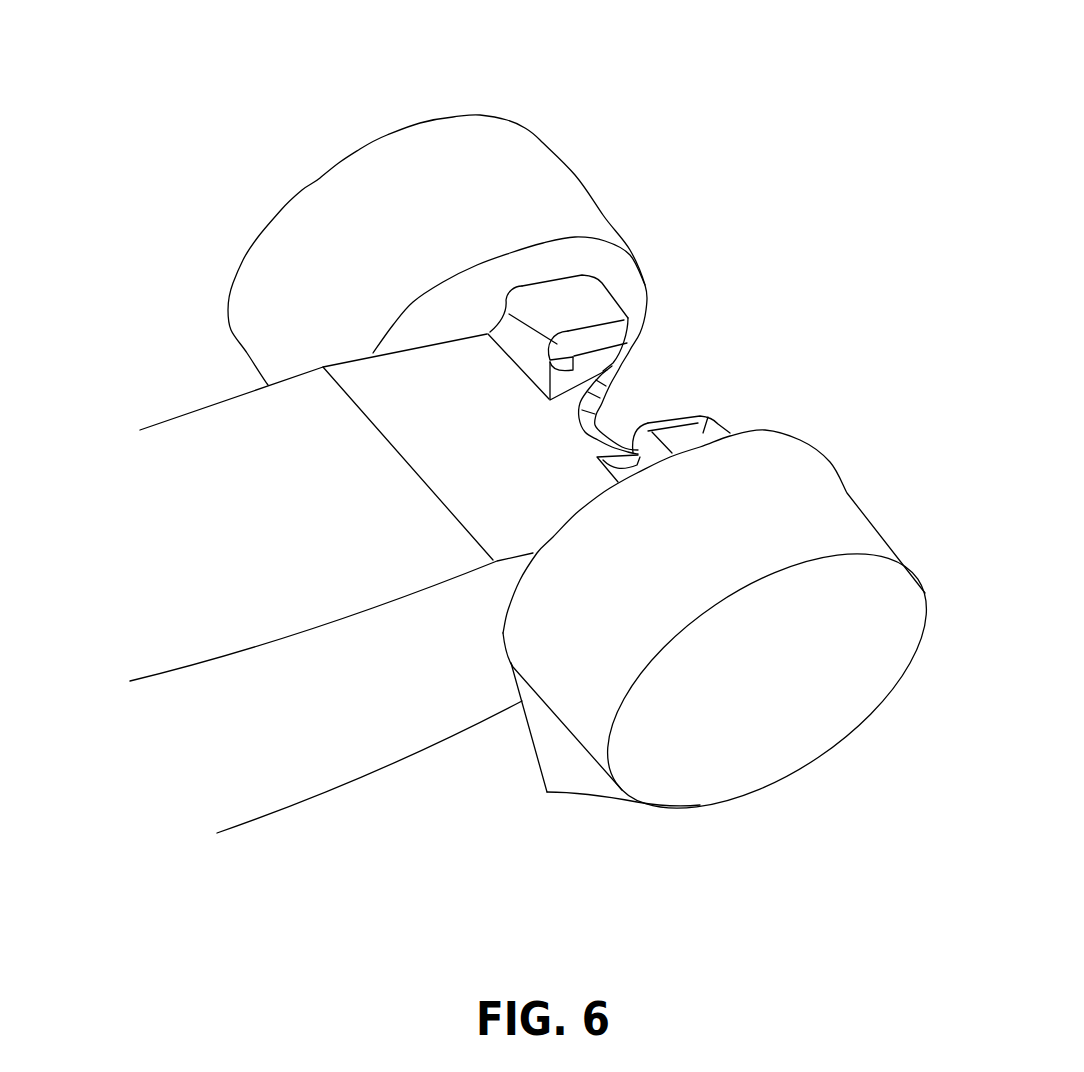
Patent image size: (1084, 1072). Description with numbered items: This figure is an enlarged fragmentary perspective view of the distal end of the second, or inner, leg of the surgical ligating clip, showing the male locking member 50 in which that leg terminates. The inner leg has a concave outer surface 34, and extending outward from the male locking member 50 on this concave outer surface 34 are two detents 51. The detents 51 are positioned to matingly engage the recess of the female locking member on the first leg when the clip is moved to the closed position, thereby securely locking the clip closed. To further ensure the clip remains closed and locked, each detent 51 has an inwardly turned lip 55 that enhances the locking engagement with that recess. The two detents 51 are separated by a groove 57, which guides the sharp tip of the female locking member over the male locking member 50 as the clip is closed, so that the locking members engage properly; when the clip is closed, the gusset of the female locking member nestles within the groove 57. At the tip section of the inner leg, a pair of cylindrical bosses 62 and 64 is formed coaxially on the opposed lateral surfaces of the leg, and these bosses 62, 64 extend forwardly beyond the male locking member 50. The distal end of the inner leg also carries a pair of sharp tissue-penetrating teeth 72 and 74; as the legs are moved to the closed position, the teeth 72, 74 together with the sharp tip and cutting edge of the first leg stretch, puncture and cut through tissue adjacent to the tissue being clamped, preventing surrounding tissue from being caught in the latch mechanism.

The concave outer surface 34 is at (267, 521).
The male locking member 50 is at (731, 295).
The detents 51 is at (603, 340).
The inwardly turned lip 55 is at (530, 316).
The groove 57 is at (590, 424).
The cylindrical boss 62 is at (411, 282).
The cylindrical boss 64 is at (782, 693).
The sharp tissue-penetrating tooth 72 is at (605, 793).
The sharp tissue-penetrating tooth 74 is at (354, 474).